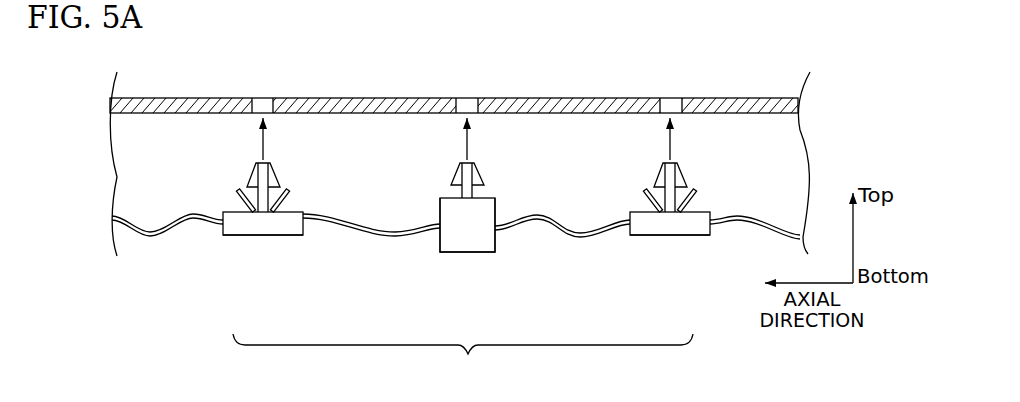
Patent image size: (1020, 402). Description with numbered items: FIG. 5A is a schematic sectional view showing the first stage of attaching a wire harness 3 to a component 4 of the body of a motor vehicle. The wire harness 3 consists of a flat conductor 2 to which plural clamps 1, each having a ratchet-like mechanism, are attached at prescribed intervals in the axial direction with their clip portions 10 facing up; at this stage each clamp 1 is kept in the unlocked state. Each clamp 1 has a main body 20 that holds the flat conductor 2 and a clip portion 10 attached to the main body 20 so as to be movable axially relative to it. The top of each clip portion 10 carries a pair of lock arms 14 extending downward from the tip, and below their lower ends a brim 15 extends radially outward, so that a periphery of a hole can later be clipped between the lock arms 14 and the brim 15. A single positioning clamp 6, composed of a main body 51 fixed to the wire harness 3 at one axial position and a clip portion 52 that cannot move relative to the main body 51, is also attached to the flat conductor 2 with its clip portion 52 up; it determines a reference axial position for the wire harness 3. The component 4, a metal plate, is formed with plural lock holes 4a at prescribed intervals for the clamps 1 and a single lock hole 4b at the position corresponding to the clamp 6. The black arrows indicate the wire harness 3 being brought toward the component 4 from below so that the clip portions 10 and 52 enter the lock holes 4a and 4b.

The clamp 1 is at (254, 240).
The flat conductor 2 is at (354, 240).
The wire harness 3 is at (463, 364).
The component of the body of the motor vehicle 4 is at (358, 92).
The lock hole 4a is at (267, 108).
The lock hole 4b is at (470, 108).
The positioning clamp 6 is at (462, 256).
The clip portion 10 is at (236, 186).
The lock arms 14 is at (279, 180).
The brim 15 is at (289, 190).
The main body 20 is at (225, 239).
The main body 51 is at (496, 240).
The clip portion 52 is at (484, 167).